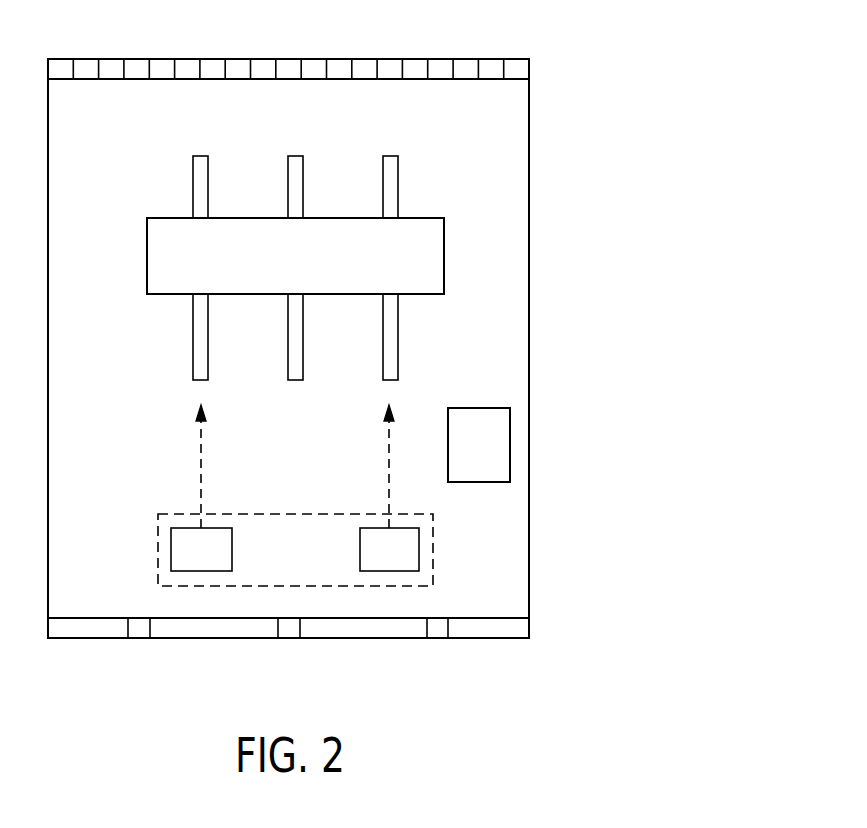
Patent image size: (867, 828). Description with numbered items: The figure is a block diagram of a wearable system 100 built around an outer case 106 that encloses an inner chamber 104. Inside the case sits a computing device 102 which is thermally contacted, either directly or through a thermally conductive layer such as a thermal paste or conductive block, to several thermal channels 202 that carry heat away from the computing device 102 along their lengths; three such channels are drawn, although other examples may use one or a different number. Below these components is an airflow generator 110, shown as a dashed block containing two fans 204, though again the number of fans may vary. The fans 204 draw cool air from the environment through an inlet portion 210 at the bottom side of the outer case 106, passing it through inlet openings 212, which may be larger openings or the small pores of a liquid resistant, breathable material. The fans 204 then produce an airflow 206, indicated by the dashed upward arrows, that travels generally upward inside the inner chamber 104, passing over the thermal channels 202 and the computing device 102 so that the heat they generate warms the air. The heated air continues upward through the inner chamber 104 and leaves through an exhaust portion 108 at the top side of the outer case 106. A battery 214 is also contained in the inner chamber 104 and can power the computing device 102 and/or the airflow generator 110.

The wearable system 100 is at (563, 78).
The computing device 102 is at (444, 257).
The inner chamber 104 is at (503, 197).
The outer case 106 is at (529, 142).
The exhaust portion 108 is at (490, 70).
The airflow generator 110 is at (158, 550).
The thermal channels 202 is at (288, 336).
The fans 204 is at (185, 528).
The airflow 206 is at (201, 467).
The inlet portion 210 is at (495, 628).
The inlet openings 212 is at (437, 630).
The battery 214 is at (510, 445).